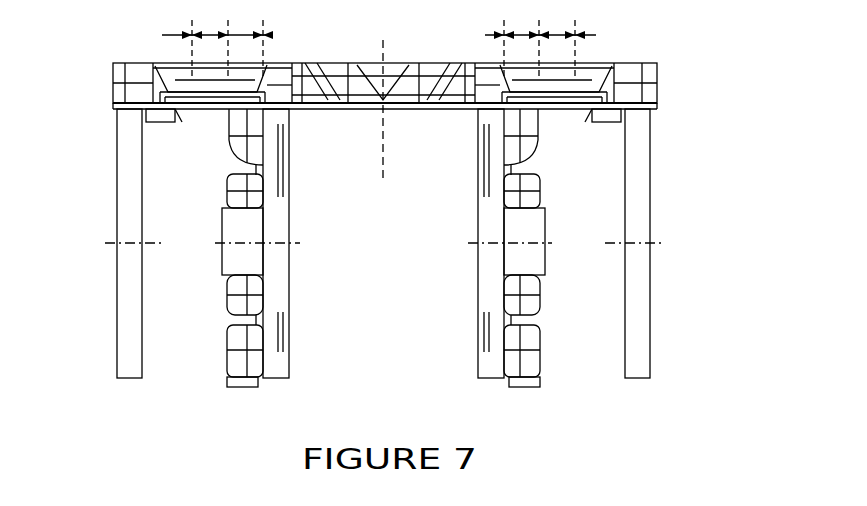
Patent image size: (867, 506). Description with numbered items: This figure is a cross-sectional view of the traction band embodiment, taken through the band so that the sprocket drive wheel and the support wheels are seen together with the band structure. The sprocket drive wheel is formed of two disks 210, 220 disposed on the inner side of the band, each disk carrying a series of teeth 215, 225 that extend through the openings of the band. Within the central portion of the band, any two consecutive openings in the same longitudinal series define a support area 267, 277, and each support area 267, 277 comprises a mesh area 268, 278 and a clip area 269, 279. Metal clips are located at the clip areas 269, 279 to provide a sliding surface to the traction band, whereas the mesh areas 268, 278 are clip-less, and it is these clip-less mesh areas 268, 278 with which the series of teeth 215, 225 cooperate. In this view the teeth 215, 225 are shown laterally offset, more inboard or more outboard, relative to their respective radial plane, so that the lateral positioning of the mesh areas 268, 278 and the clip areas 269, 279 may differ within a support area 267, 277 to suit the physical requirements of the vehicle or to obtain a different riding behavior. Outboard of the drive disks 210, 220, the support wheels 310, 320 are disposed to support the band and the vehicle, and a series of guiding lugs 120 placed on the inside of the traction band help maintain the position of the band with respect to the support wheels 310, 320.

The guiding lugs 120 is at (146, 125).
The sprocket drive wheel disk 210 is at (289, 302).
The series of teeth 215 is at (223, 125).
The sprocket drive wheel disk 220 is at (477, 311).
The series of teeth 225 is at (548, 128).
The support area 267 is at (208, 109).
The mesh area 268 is at (271, 49).
The clip area 269 is at (170, 49).
The support area 277 is at (553, 125).
The mesh area 278 is at (489, 49).
The clip area 279 is at (591, 49).
The support wheel 310 is at (650, 314).
The support wheel 320 is at (117, 316).